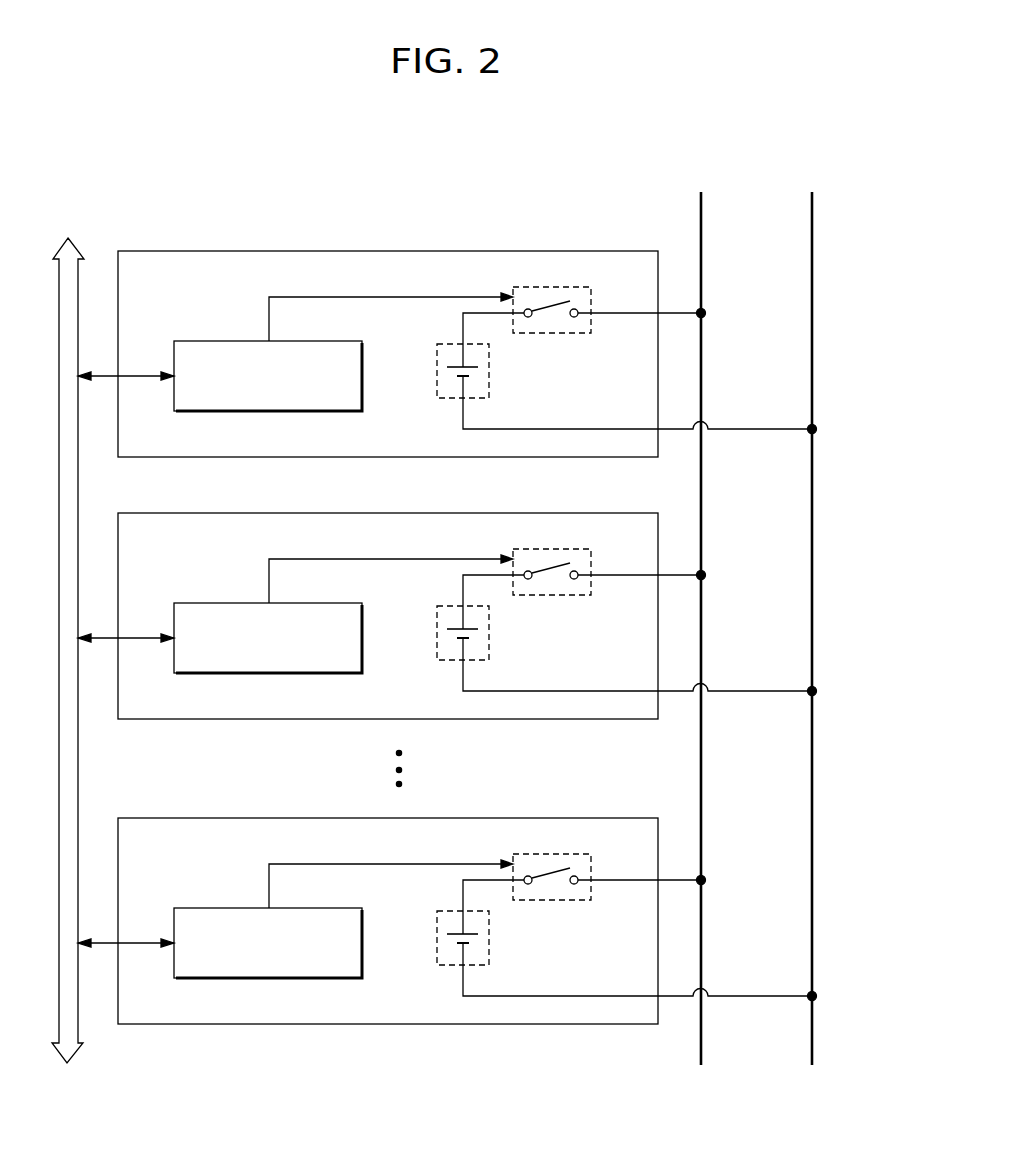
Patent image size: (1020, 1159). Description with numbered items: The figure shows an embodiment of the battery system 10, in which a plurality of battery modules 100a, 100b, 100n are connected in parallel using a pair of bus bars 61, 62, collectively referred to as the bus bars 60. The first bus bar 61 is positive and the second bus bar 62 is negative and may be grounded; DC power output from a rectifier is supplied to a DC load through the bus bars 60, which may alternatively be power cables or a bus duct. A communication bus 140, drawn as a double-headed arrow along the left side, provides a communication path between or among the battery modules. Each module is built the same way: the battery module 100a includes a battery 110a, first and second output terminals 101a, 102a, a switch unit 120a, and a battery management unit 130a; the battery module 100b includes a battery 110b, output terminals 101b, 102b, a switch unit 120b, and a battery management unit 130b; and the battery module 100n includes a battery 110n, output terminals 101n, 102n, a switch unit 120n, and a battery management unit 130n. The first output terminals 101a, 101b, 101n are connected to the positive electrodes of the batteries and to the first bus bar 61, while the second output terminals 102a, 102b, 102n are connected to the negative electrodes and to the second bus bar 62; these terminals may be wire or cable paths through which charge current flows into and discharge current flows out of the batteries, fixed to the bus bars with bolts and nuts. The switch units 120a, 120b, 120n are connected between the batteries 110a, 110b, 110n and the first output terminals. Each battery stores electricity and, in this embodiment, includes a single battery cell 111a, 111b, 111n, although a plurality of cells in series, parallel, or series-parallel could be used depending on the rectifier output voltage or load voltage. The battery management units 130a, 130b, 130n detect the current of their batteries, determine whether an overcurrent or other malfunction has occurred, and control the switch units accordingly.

The battery system 10 is at (666, 159).
The bus bars 60 is at (735, 268).
The first bus bar 61 is at (702, 282).
The second bus bar 62 is at (811, 282).
The communication bus 140 is at (78, 248).
The battery module 100a is at (580, 251).
The battery module 100b is at (479, 601).
The battery module 100n is at (479, 906).
The first output terminal 101a is at (705, 316).
The first output terminal 101b is at (734, 575).
The first output terminal 101n is at (734, 880).
The second output terminal 102a is at (817, 429).
The second output terminal 102b is at (844, 691).
The second output terminal 102n is at (844, 996).
The battery 110a is at (500, 371).
The battery 110b is at (500, 633).
The battery 110n is at (500, 938).
The battery cell 111a is at (470, 369).
The battery cell 111b is at (505, 627).
The battery cell 111n is at (505, 932).
The switch unit 120a is at (563, 286).
The switch unit 120b is at (575, 556).
The switch unit 120n is at (575, 861).
The battery management unit 130a is at (303, 340).
The battery management unit 130b is at (343, 614).
The battery management unit 130n is at (343, 919).